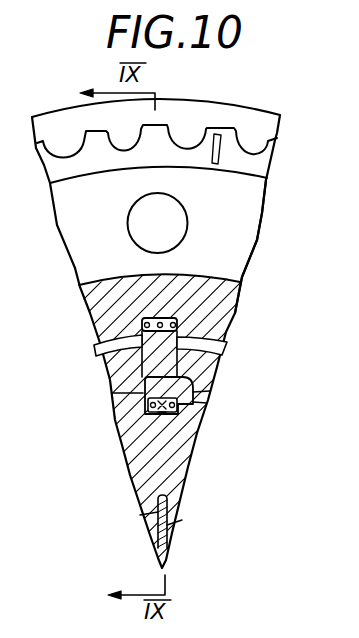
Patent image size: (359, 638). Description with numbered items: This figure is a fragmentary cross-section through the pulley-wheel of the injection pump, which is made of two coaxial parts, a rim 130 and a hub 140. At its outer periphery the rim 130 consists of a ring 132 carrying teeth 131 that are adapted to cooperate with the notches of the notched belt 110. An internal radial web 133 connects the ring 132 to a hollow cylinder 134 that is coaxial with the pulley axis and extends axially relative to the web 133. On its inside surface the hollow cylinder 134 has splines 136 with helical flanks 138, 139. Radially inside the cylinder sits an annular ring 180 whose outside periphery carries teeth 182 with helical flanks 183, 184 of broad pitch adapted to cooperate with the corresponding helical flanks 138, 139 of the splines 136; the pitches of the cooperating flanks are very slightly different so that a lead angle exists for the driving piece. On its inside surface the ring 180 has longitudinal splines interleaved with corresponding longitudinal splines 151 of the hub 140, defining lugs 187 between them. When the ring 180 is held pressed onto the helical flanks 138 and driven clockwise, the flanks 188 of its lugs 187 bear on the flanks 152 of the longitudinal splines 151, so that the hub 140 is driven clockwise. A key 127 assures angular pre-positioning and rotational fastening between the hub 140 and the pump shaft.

The notched belt 110 is at (280, 115).
The teeth 131 is at (92, 142).
The ring 132 is at (265, 163).
The internal radial web 133 is at (248, 202).
The rim 130 is at (252, 258).
The splines 136 is at (157, 318).
The helical flank 138 is at (140, 316).
The helical flank 139 is at (199, 279).
The hollow cylinder 134 is at (239, 316).
The annular ring 180 is at (221, 383).
The helical flank 183 is at (97, 353).
The helical flank 184 is at (223, 353).
The teeth 182 is at (101, 377).
The flanks 188 is at (142, 384).
The longitudinal splines 151 is at (142, 418).
The flanks 152 is at (193, 418).
The lugs 187 is at (160, 416).
The hub 140 is at (199, 466).
The key 127 is at (172, 522).